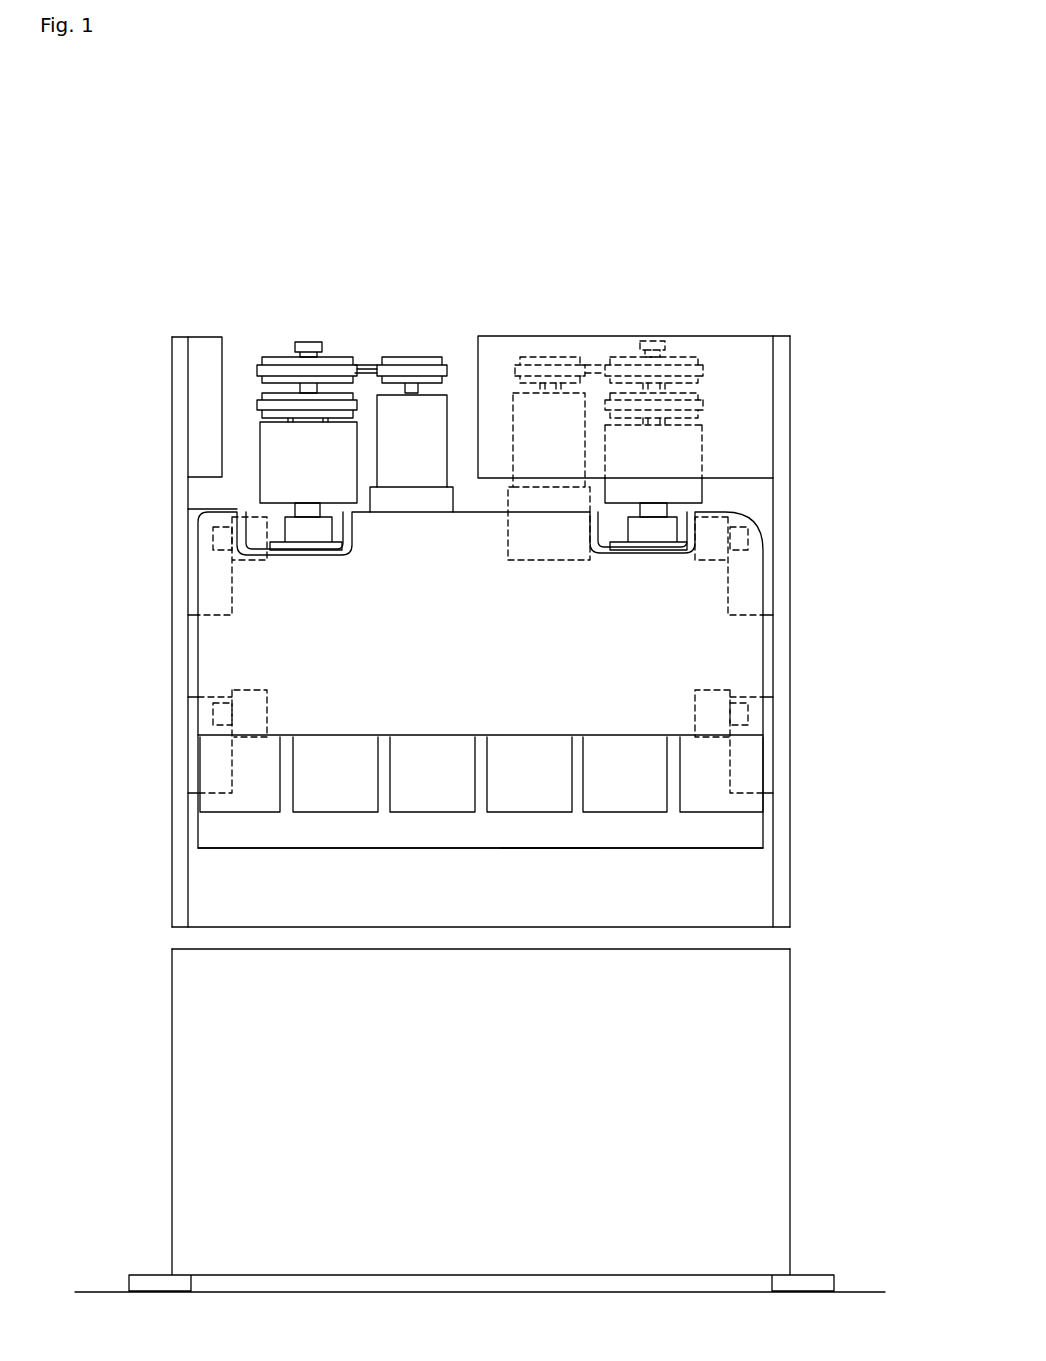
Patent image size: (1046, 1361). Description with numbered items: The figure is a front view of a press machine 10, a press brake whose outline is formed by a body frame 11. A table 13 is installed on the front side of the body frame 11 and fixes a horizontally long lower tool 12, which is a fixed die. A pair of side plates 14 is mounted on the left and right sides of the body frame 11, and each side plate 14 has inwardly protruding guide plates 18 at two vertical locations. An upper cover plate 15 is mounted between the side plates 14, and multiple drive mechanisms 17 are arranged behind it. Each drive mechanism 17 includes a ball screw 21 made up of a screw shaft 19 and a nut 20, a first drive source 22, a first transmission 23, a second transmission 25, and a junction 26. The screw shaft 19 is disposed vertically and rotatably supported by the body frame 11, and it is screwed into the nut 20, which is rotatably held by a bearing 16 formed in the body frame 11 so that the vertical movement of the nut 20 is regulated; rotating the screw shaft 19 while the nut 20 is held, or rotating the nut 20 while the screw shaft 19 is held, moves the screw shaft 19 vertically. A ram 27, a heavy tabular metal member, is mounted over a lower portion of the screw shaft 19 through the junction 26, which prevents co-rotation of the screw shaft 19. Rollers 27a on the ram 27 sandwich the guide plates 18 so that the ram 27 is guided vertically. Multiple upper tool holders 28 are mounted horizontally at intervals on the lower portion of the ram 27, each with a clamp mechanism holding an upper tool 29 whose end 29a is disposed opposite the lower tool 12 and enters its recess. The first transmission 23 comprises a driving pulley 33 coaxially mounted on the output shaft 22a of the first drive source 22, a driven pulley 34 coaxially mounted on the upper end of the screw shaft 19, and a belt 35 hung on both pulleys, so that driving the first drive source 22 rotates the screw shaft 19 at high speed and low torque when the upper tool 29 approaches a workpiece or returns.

The press machine 10 is at (803, 269).
The body frame 11 is at (792, 674).
The lower tool 12 is at (190, 926).
The table 13 is at (190, 1109).
The side plate 14 is at (180, 864).
The upper cover plate 15 is at (746, 355).
The bearing 16 is at (290, 452).
The drive mechanism 17 is at (319, 328).
The guide plate 18 is at (196, 596).
The screw shaft 19 is at (305, 342).
The nut 20 is at (275, 487).
The ball screw 21 is at (339, 367).
The first drive source 22 is at (452, 480).
The output shaft 22a is at (483, 477).
The first transmission 23 is at (366, 354).
The second transmission 25 is at (262, 405).
The junction 26 is at (305, 538).
The ram 27 is at (215, 657).
The roller 27a is at (213, 537).
The upper tool holder 28 is at (276, 748).
The upper tool 29 is at (478, 830).
The end 29a is at (552, 849).
The driving pulley 33 is at (408, 385).
The driven pulley 34 is at (338, 357).
The belt 35 is at (373, 372).